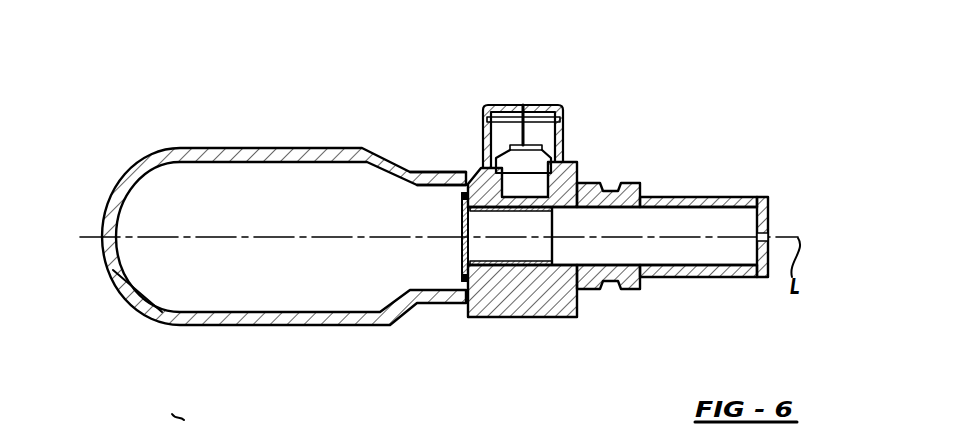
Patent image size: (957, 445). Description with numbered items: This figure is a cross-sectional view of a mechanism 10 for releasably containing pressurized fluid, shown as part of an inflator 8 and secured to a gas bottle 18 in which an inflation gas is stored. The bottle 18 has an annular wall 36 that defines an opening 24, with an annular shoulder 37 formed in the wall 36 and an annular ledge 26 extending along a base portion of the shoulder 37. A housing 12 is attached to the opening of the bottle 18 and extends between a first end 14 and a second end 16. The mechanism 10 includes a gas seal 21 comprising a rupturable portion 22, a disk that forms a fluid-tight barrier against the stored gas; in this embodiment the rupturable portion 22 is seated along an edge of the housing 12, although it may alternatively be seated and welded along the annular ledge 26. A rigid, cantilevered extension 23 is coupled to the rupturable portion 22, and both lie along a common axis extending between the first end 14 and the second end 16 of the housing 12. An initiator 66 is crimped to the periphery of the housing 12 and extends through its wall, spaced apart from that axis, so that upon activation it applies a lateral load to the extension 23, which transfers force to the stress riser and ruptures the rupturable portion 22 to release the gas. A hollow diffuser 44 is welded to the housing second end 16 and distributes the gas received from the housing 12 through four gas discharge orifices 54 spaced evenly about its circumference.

The inflator 8 is at (178, 406).
The mechanism 10 is at (452, 357).
The housing 12 is at (577, 307).
The first end 14 is at (484, 303).
The second end 16 is at (570, 295).
The gas bottle 18 is at (190, 147).
The gas seal 21 is at (495, 248).
The rupturable portion 22 is at (460, 230).
The extension 23 is at (545, 258).
The opening 24 is at (464, 189).
The annular ledge 26 is at (458, 287).
The annular wall 36 is at (162, 312).
The annular shoulder 37 is at (467, 289).
The diffuser 44 is at (777, 194).
The gas discharge orifices 54 is at (657, 197).
The initiator 66 is at (523, 103).